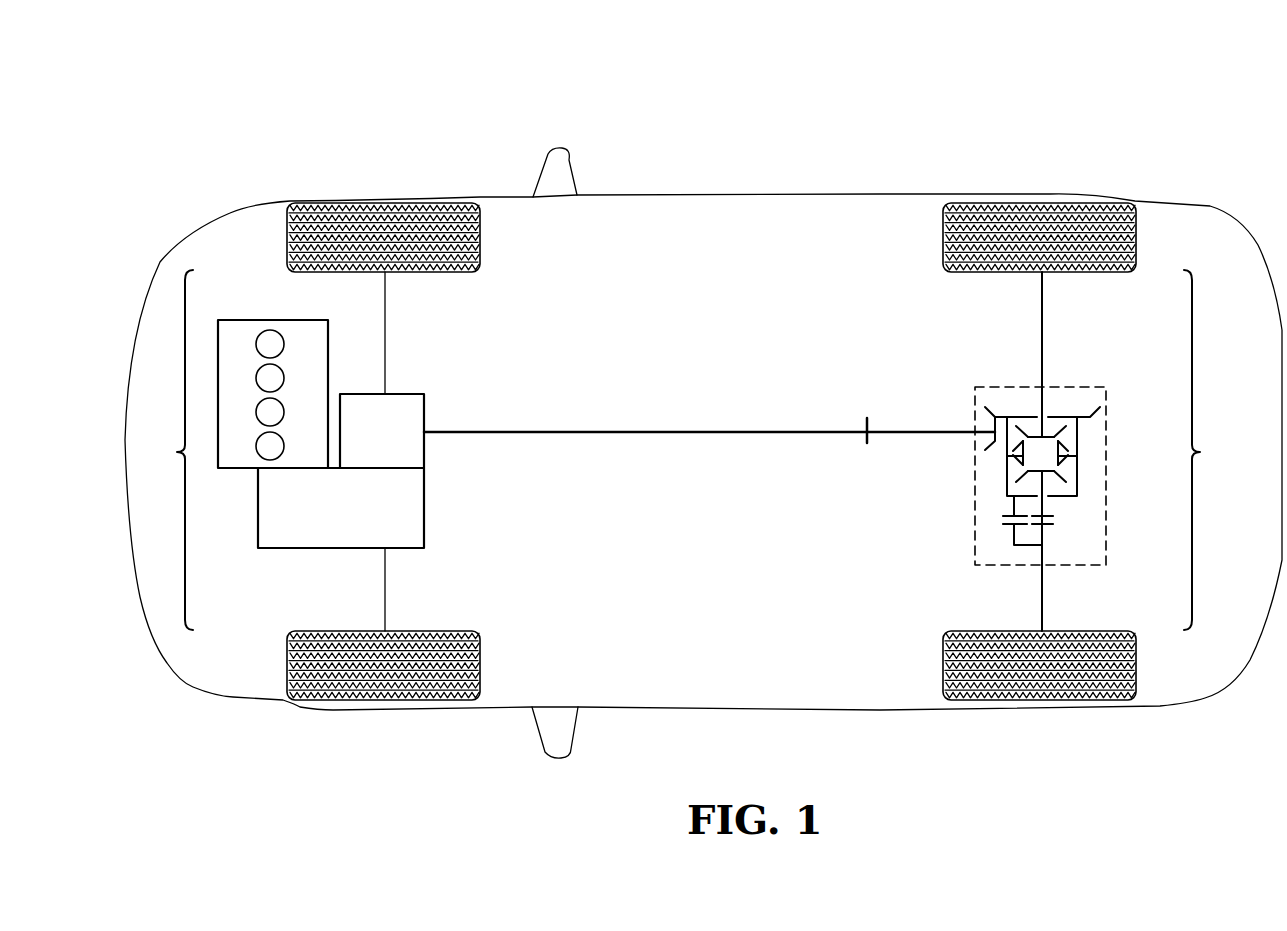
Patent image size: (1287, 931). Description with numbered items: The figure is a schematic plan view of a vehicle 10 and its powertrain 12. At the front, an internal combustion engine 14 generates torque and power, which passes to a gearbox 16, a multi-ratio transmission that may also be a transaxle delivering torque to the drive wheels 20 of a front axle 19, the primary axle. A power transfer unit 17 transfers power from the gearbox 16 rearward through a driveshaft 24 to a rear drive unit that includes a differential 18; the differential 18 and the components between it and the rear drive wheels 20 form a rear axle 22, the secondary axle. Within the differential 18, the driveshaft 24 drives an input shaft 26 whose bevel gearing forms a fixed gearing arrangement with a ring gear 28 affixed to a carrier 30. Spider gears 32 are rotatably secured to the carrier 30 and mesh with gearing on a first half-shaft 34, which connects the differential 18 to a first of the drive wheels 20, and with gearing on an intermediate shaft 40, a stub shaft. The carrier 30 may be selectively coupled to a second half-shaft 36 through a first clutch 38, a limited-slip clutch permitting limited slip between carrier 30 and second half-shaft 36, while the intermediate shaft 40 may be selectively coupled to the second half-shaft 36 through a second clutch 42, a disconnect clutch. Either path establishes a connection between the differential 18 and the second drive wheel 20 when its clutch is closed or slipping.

The vehicle 10 is at (691, 398).
The powertrain 12 is at (172, 291).
The internal combustion engine 14 is at (274, 320).
The gearbox 16 is at (348, 548).
The power transfer unit 17 is at (403, 394).
The differential 18 is at (975, 403).
The front axle 19 is at (303, 440).
The drive wheels 20 is at (383, 203).
The rear axle 22 is at (1055, 450).
The driveshaft 24 is at (808, 430).
The input shaft 26 is at (932, 432).
The ring gear 28 is at (1093, 413).
The carrier 30 is at (1078, 470).
The spider gears 32 is at (1008, 452).
The first half-shaft 34 is at (1043, 328).
The second half-shaft 36 is at (1034, 574).
The first clutch 38 is at (999, 530).
The intermediate shaft 40 is at (1046, 507).
The second clutch 42 is at (1057, 530).